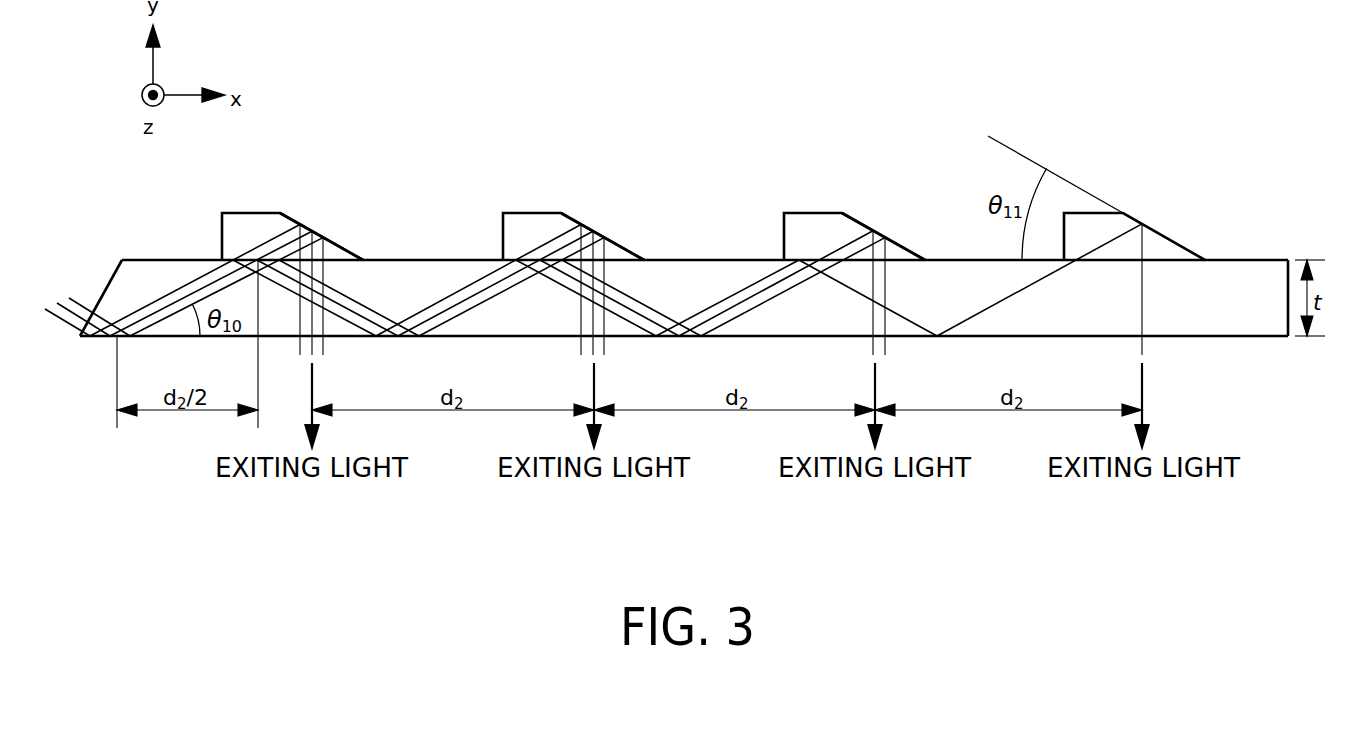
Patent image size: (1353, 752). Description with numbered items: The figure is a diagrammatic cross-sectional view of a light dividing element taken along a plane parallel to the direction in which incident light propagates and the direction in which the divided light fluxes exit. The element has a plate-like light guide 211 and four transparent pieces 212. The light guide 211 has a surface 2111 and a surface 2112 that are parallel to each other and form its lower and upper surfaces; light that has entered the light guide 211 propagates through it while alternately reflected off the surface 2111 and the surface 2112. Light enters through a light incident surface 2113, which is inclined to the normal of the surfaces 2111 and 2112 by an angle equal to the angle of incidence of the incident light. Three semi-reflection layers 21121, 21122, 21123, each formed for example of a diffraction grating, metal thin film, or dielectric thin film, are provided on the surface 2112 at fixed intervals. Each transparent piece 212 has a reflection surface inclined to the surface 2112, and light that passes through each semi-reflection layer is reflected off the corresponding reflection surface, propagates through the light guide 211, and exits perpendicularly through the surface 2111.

The light guide 211 is at (669, 298).
The surface 2111 is at (790, 338).
The surface 2112 is at (685, 257).
The light incident surface 2113 is at (104, 292).
The transparent piece 212 is at (242, 222).
The semi-reflection layer 21121 is at (290, 219).
The semi-reflection layer 21122 is at (571, 219).
The semi-reflection layer 21123 is at (852, 219).